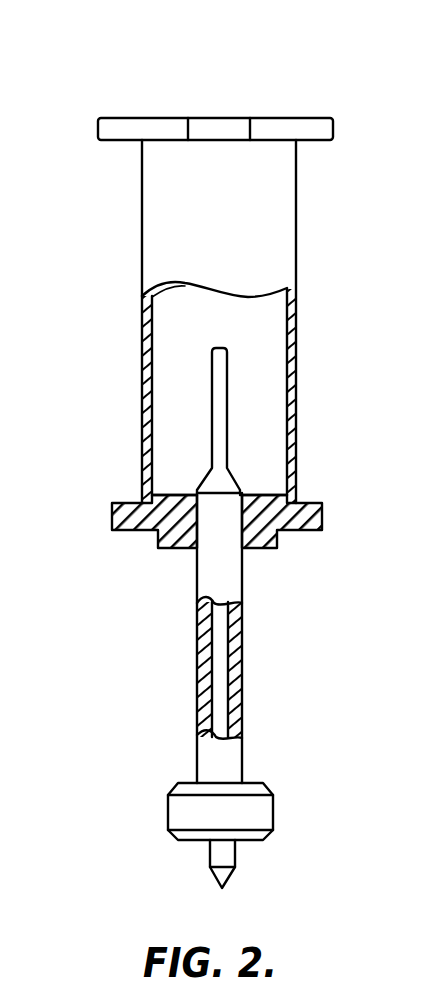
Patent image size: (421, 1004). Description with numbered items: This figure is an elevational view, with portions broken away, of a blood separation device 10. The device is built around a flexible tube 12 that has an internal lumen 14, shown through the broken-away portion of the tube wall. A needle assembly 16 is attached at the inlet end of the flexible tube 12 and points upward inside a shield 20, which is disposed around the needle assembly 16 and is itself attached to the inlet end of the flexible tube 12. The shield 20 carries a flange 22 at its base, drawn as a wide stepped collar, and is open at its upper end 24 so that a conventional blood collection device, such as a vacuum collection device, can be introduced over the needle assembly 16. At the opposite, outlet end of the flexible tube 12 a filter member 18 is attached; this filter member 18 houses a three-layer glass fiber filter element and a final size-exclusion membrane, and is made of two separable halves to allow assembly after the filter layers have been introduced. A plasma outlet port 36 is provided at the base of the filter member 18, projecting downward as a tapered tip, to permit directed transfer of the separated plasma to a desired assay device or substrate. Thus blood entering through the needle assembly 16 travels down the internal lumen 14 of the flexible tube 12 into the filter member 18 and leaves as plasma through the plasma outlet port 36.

The blood separation device 10 is at (80, 83).
The flexible tube 12 is at (242, 647).
The internal lumen 14 is at (220, 692).
The needle assembly 16 is at (220, 435).
The filter member 18 is at (250, 812).
The shield 20 is at (155, 238).
The flange 22 is at (325, 513).
The upper end 24 is at (276, 118).
The plasma outlet port 36 is at (222, 857).